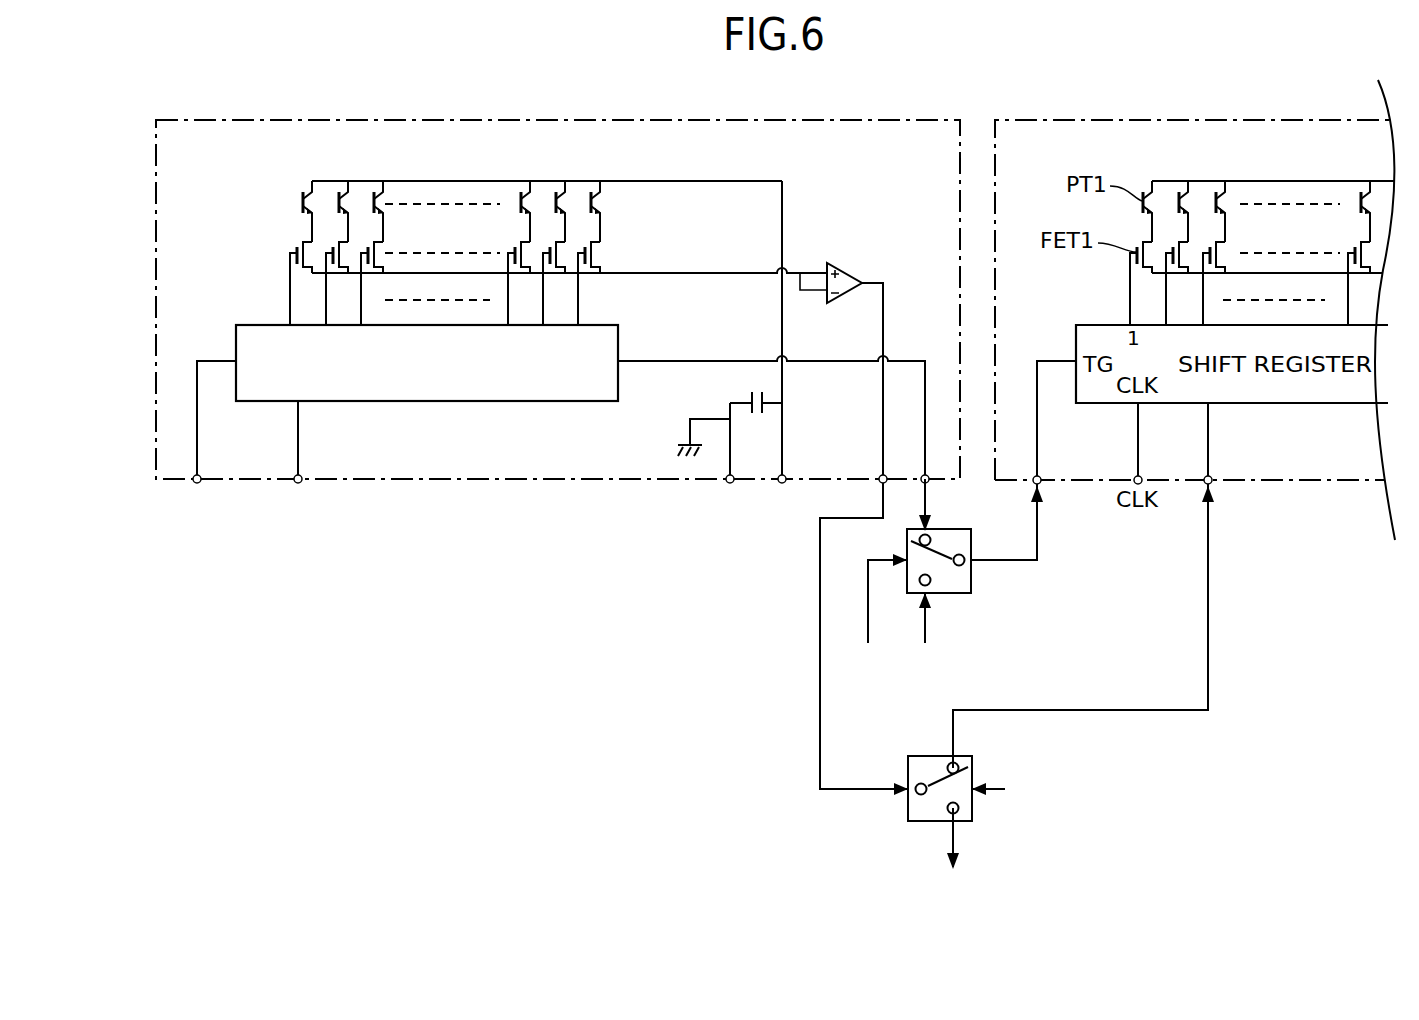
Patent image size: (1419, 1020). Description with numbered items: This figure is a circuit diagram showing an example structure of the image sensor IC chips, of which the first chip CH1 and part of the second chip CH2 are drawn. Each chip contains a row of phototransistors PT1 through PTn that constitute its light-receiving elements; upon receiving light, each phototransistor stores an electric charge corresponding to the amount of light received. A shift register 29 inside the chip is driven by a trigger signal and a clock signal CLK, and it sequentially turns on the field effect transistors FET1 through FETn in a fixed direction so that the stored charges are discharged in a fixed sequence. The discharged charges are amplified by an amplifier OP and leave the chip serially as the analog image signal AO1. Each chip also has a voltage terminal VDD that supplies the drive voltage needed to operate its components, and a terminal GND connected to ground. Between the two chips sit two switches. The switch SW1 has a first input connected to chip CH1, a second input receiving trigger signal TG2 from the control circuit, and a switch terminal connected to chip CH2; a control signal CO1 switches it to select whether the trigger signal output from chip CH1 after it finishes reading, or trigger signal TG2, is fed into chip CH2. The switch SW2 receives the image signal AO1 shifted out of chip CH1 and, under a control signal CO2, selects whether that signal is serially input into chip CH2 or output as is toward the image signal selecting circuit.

The image sensor IC chip CH1 is at (495, 118).
The image sensor IC chip CH2 is at (1143, 118).
The phototransistor PT1 is at (303, 201).
The phototransistor PTn is at (592, 187).
The field effect transistor FET1 is at (299, 253).
The field effect transistor FETn is at (592, 248).
The shift register 29 is at (540, 374).
The amplifier OP is at (843, 264).
The switch SW1 is at (971, 585).
The switch SW2 is at (925, 756).
The trigger signal TG2 is at (926, 632).
The clock signal CLK is at (299, 456).
The voltage terminal VDD is at (790, 345).
The terminal GND is at (730, 451).
The control signal CO1 is at (876, 613).
The control signal CO2 is at (1016, 788).
The image signal AO1 is at (875, 778).